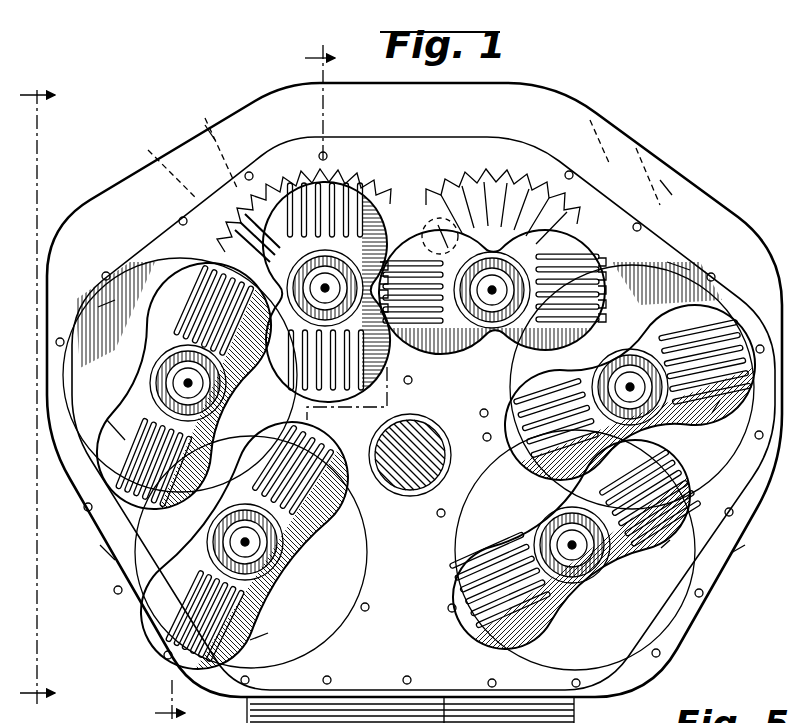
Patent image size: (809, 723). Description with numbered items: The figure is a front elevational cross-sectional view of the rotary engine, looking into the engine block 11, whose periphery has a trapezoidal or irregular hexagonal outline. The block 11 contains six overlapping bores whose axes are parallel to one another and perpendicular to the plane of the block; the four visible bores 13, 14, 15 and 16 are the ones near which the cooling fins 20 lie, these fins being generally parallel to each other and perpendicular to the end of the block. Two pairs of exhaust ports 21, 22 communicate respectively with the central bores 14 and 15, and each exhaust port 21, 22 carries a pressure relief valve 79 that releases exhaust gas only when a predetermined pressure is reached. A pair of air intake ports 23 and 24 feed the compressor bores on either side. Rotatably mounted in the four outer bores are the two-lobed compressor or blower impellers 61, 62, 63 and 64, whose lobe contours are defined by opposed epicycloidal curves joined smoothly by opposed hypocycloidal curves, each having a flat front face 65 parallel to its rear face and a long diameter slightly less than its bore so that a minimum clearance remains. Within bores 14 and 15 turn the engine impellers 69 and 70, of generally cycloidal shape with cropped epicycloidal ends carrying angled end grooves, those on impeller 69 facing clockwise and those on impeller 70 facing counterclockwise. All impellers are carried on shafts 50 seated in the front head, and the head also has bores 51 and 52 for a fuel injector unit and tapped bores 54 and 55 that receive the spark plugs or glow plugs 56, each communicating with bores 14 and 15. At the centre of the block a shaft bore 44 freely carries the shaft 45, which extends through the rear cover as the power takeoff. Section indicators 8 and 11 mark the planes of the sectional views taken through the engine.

The section line 8- 8 is at (271, 384).
The block 11 is at (54, 394).
The bore 13 is at (98, 307).
The bore 14 is at (385, 203).
The bore 15 is at (438, 225).
The bore 16 is at (667, 262).
The cooling fins 20 is at (565, 105).
The exhaust ports 21 is at (198, 133).
The exhaust ports 22 is at (665, 178).
The air intake port 23 is at (103, 547).
The air intake port 24 is at (731, 553).
The shaft bore 44 is at (420, 482).
The shaft 45 is at (429, 498).
The shafts 50 is at (178, 378).
The bore 51 is at (408, 385).
The bore 52 is at (479, 413).
The tapped bore 54 is at (393, 172).
The tapped bore 55 is at (452, 185).
The spark plugs or glow plugs 56 is at (370, 183).
The compressor impeller 61 is at (270, 633).
The compressor impeller 62 is at (106, 419).
The compressor impeller 63 is at (712, 414).
The compressor impeller 64 is at (661, 549).
The front face 65 is at (236, 390).
The engine impeller 69 is at (272, 279).
The engine impeller 70 is at (500, 350).
The pressure relief valve 79 is at (175, 152).